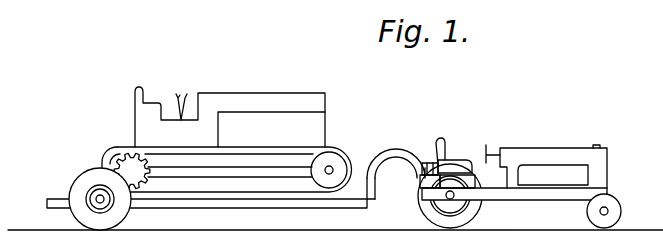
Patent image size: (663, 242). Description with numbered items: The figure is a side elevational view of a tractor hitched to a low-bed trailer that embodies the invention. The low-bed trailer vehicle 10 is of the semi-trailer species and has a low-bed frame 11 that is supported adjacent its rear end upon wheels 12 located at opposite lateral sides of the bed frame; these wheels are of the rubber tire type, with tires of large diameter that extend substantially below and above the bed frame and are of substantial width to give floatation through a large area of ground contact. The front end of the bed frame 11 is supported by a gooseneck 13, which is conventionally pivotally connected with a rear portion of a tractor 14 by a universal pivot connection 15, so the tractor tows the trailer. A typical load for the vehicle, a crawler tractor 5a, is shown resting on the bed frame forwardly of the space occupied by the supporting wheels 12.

The operator's cab / body 5a is at (252, 88).
The low-bed trailer vehicle 10 is at (285, 203).
The low-bed frame 11 is at (238, 200).
The wheels 12 is at (79, 170).
The gooseneck 13 is at (397, 155).
The tractor 14 is at (577, 127).
The universal pivot connection 15 is at (413, 183).